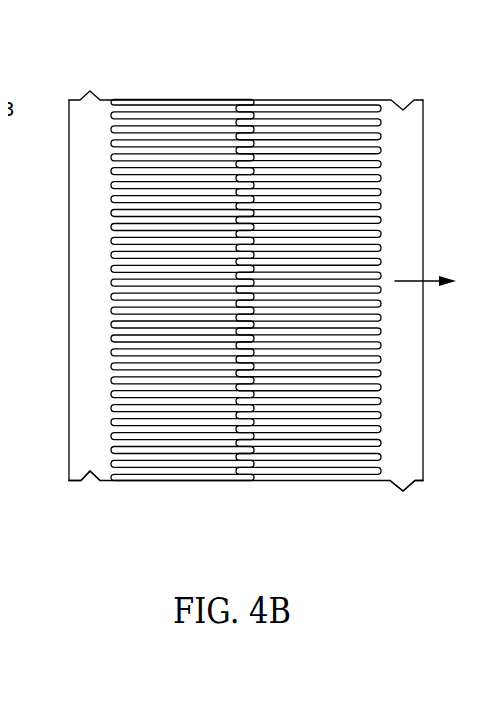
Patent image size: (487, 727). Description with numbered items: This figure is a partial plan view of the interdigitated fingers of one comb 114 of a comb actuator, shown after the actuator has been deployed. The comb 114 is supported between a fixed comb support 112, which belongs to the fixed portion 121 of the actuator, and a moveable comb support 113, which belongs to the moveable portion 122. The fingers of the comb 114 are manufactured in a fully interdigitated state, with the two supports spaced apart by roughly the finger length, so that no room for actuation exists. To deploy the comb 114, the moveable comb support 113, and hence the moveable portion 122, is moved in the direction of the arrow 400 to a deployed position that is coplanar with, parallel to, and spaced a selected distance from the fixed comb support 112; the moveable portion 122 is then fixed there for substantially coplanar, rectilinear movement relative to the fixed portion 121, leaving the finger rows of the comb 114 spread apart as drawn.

The fixed comb support 112 is at (72, 178).
The moveable comb support 113 is at (407, 211).
The comb 114 is at (269, 118).
The fixed portion 121 is at (51, 485).
The moveable portion 122 is at (434, 486).
The arrow 400 is at (402, 278).